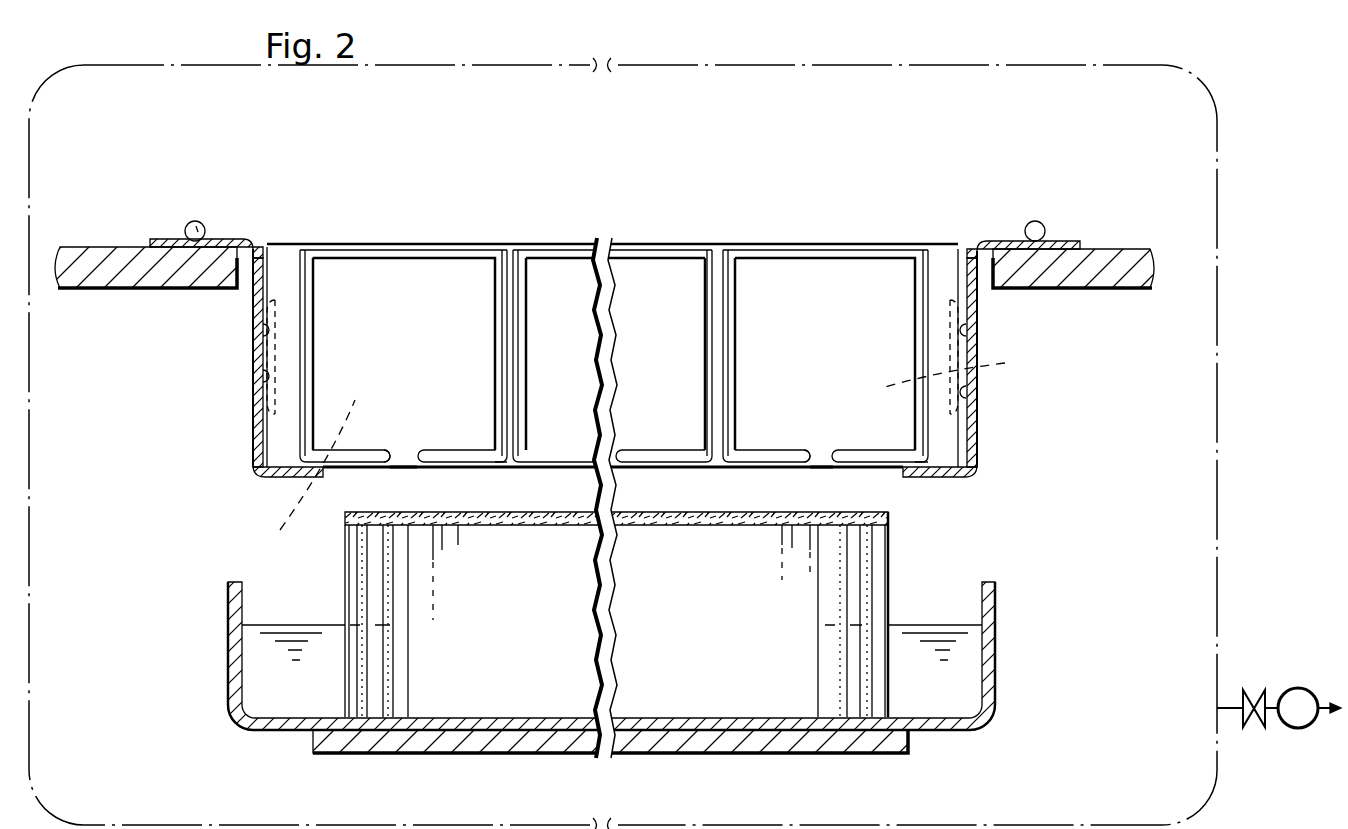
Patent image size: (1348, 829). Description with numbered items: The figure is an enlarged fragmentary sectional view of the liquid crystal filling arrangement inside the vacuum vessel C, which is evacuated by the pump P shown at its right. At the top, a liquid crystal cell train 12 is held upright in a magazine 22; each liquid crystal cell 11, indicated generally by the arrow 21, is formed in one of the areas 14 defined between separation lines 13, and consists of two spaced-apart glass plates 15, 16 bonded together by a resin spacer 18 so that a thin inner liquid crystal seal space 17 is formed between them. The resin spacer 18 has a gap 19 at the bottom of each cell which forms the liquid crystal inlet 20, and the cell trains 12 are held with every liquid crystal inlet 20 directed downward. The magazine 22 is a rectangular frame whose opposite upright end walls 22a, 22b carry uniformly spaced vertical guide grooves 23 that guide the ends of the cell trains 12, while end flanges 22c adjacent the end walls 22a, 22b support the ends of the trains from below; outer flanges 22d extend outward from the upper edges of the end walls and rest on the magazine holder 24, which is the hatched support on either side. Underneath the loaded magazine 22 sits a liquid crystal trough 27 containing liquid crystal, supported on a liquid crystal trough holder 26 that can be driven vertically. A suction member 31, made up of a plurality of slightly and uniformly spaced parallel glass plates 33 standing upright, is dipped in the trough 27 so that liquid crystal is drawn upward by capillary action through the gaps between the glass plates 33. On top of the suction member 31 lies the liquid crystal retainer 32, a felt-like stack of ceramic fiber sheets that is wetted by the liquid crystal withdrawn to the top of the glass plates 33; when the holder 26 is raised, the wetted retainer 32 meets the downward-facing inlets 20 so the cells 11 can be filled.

The liquid crystal cell 11 is at (607, 323).
The liquid crystal cell train 12 is at (681, 246).
The separation line 13 is at (510, 290).
The area 14 is at (412, 317).
The glass plate 15 is at (880, 323).
The glass plate 16 is at (838, 246).
The inner liquid crystal seal space 17 is at (654, 447).
The resin spacer 18 is at (507, 464).
The gap 19 is at (405, 470).
The liquid crystal inlet 20 is at (395, 467).
The cell assembly 21 is at (465, 180).
The magazine 22 is at (615, 353).
The end wall 22a is at (262, 333).
The end wall 22b is at (975, 342).
The end flange 22c is at (285, 478).
The outer flange 22d is at (232, 243).
The vertical guide groove 23 is at (268, 378).
The magazine holder 24 is at (118, 256).
The liquid crystal trough holder 26 is at (571, 756).
The liquid crystal trough 27 is at (997, 652).
The suction member 31 is at (592, 628).
The liquid crystal retainer 32 is at (660, 514).
The glass plate 33 is at (375, 662).
The vacuum vessel C is at (880, 63).
The pump P is at (1279, 708).